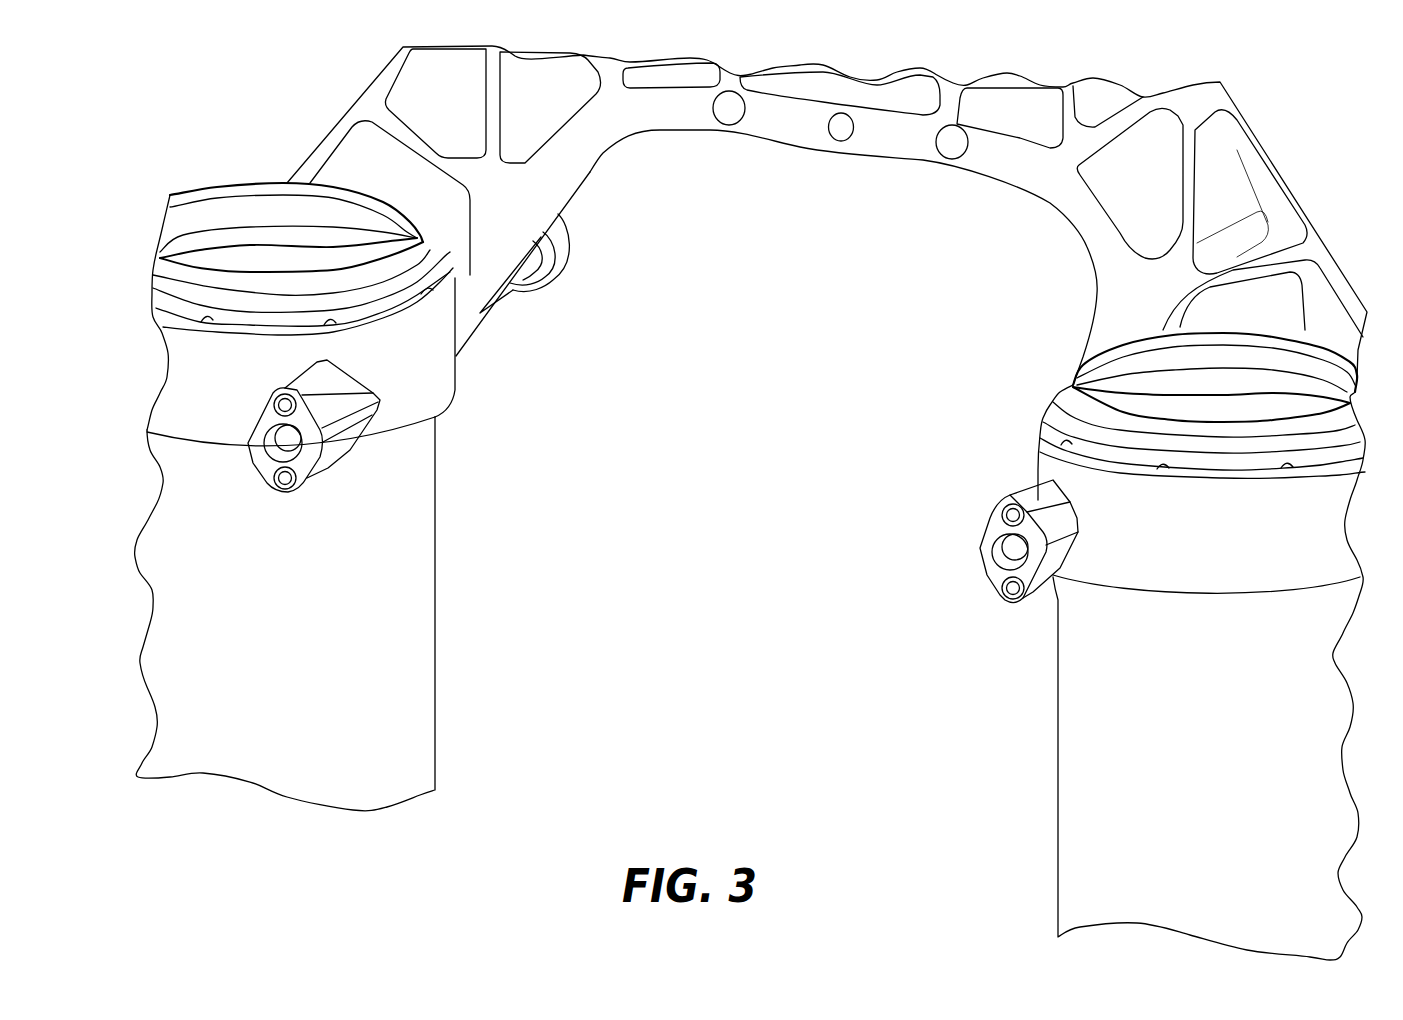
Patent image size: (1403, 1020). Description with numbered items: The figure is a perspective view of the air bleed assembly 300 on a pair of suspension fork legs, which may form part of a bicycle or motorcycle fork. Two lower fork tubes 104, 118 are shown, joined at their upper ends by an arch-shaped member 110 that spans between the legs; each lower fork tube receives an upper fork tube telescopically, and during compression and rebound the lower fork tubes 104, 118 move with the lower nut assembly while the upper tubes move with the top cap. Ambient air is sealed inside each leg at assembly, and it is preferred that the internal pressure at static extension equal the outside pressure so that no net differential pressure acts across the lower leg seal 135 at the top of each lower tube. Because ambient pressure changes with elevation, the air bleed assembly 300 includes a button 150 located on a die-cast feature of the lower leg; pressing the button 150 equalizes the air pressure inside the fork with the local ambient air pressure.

The arch member 110 is at (783, 128).
The lower leg seal 135 is at (483, 311).
The air bleed assembly 300 is at (467, 358).
The button 150 is at (280, 447).
The lower fork tube 118 is at (420, 713).
The lower fork tube 104 is at (1073, 797).